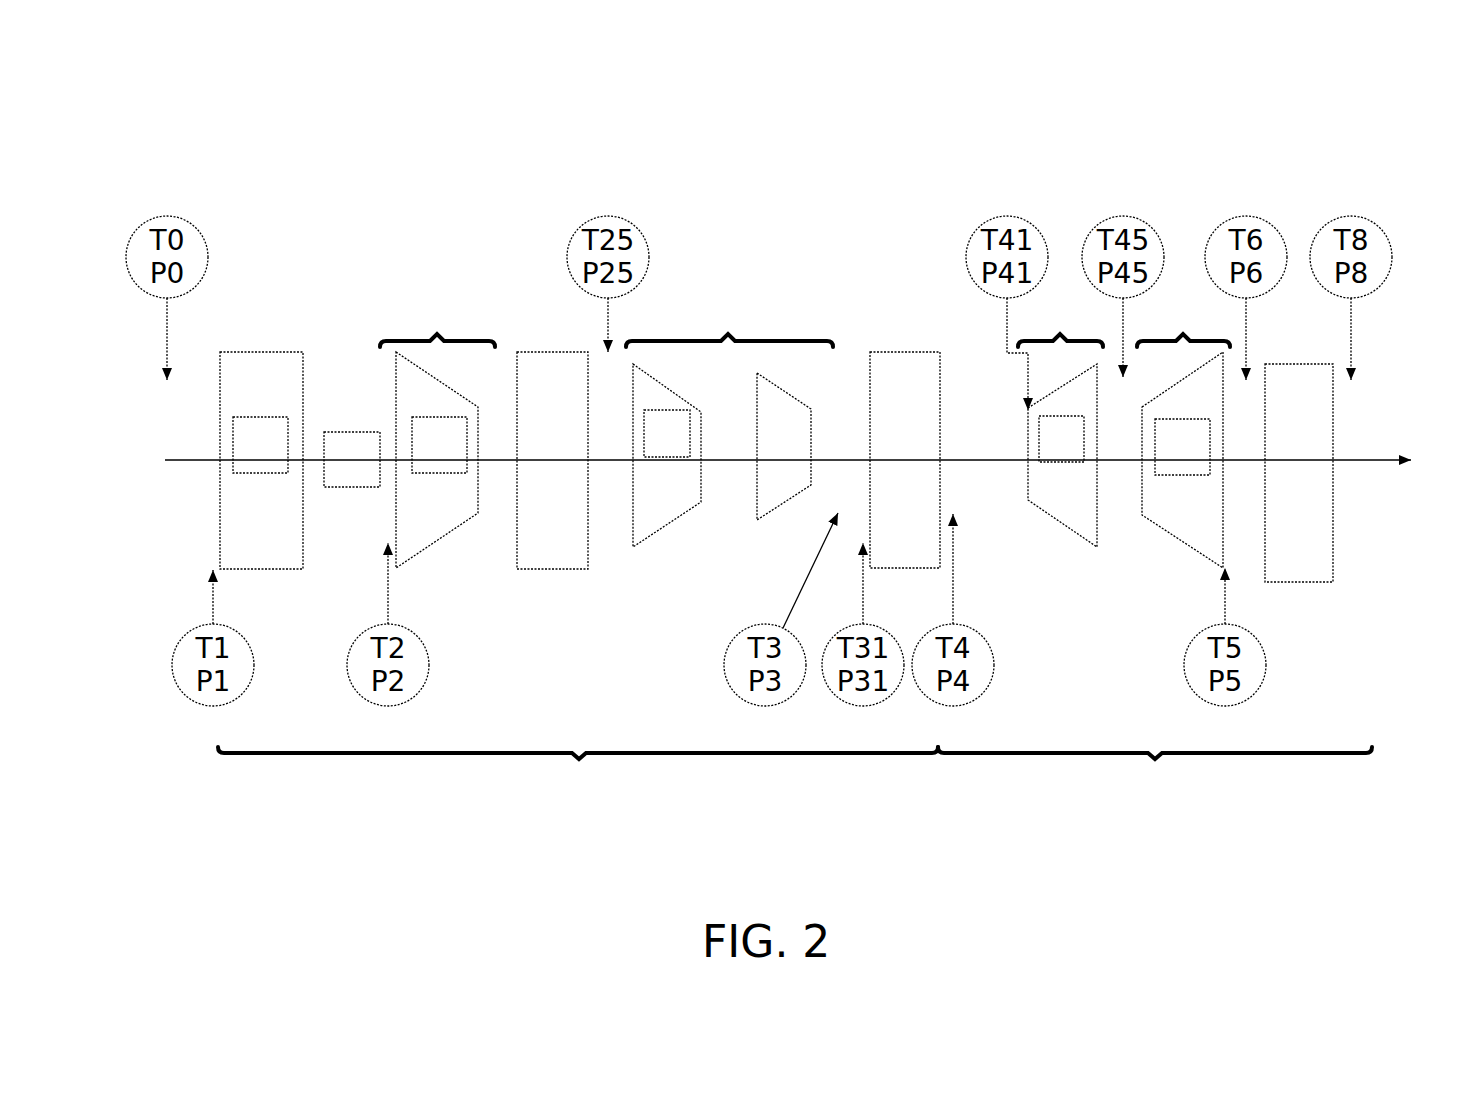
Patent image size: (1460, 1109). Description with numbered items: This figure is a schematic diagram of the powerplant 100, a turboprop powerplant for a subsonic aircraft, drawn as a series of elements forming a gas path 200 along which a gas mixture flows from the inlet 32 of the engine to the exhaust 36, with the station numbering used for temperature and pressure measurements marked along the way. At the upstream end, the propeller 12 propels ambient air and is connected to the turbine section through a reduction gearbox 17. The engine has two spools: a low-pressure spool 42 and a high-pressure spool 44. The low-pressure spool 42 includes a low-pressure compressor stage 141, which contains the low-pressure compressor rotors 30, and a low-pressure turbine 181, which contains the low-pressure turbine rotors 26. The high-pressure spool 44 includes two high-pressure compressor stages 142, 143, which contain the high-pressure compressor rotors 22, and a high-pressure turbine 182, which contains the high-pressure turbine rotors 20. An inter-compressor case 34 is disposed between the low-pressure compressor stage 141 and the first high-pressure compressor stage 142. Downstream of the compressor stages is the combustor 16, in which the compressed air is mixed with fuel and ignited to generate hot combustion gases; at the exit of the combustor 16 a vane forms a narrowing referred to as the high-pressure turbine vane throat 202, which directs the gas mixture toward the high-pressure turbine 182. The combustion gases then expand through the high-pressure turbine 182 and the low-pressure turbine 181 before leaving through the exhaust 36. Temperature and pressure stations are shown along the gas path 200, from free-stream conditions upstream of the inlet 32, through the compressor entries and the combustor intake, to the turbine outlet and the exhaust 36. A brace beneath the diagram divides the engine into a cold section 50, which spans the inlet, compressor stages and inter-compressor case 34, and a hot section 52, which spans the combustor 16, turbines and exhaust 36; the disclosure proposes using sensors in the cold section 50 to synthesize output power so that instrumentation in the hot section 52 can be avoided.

The powerplant 100 is at (186, 161).
The gas path 200 is at (1401, 437).
The high-pressure turbine vane throat 202 is at (977, 406).
The propeller 12 is at (242, 461).
The inlet 32 is at (242, 546).
The reduction gearbox 17 is at (334, 477).
The low-pressure compressor rotor 30 is at (422, 461).
The low-pressure compressor stage 141 is at (446, 518).
The inter-compressor case 34 is at (534, 476).
The high-pressure compressor stage 142 is at (676, 492).
The high-pressure compressor rotor 22 is at (654, 449).
The high-pressure compressor stage 143 is at (803, 473).
The combustor 16 is at (887, 477).
The high-pressure turbine 182 is at (1088, 497).
The high-pressure turbine rotor 20 is at (1049, 451).
The low-pressure turbine 181 is at (1218, 518).
The low-pressure turbine rotor 26 is at (1165, 463).
The exhaust 36 is at (1281, 492).
The low-pressure spool 42 is at (805, 321).
The high-pressure spool 44 is at (864, 321).
The cold section 50 is at (578, 776).
The hot section 52 is at (1155, 775).